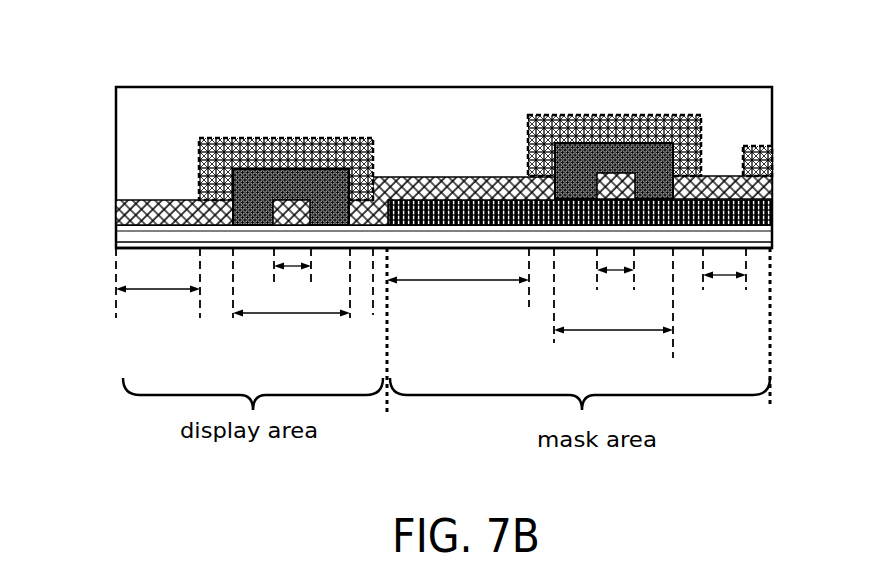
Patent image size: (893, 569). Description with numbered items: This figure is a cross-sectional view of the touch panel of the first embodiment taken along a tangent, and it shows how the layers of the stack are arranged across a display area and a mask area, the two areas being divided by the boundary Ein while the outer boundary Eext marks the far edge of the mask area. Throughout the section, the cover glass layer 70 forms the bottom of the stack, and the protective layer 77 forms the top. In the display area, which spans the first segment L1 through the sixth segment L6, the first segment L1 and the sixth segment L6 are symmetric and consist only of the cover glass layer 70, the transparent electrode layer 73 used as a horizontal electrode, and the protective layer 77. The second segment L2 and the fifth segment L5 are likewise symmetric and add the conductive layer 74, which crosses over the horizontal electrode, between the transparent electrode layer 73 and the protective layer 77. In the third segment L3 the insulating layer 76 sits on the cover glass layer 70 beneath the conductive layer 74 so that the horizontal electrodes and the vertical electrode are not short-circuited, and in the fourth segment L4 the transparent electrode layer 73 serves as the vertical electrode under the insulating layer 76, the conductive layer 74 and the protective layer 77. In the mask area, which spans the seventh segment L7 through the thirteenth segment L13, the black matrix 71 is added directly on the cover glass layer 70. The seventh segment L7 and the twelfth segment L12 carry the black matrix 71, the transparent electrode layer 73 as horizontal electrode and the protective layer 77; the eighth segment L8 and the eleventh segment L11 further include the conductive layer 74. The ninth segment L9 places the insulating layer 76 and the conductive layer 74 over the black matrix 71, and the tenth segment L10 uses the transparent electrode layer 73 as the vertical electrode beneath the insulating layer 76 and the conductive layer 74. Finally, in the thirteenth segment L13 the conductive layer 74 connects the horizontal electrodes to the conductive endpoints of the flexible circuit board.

The cover glass layer 70 is at (116, 230).
The black matrix 71 is at (773, 213).
The transparent electrode layer 73 is at (116, 198).
The conductive layer 74 is at (213, 140).
The insulating layer 76 is at (356, 140).
The protective layer 77 is at (137, 108).
The first segment L1 is at (158, 306).
The second segment L2 is at (213, 290).
The third segment L3 is at (291, 328).
The fourth segment L4 is at (292, 282).
The fifth segment L5 is at (358, 347).
The sixth segment L6 is at (383, 300).
The seventh segment L7 is at (458, 303).
The eighth segment L8 is at (538, 285).
The ninth segment L9 is at (613, 344).
The tenth segment L10 is at (613, 292).
The eleventh segment L11 is at (683, 282).
The twelfth segment L12 is at (724, 291).
The thirteenth segment L13 is at (753, 278).
The inner edge Ein is at (379, 346).
The outer edge Eext is at (761, 347).